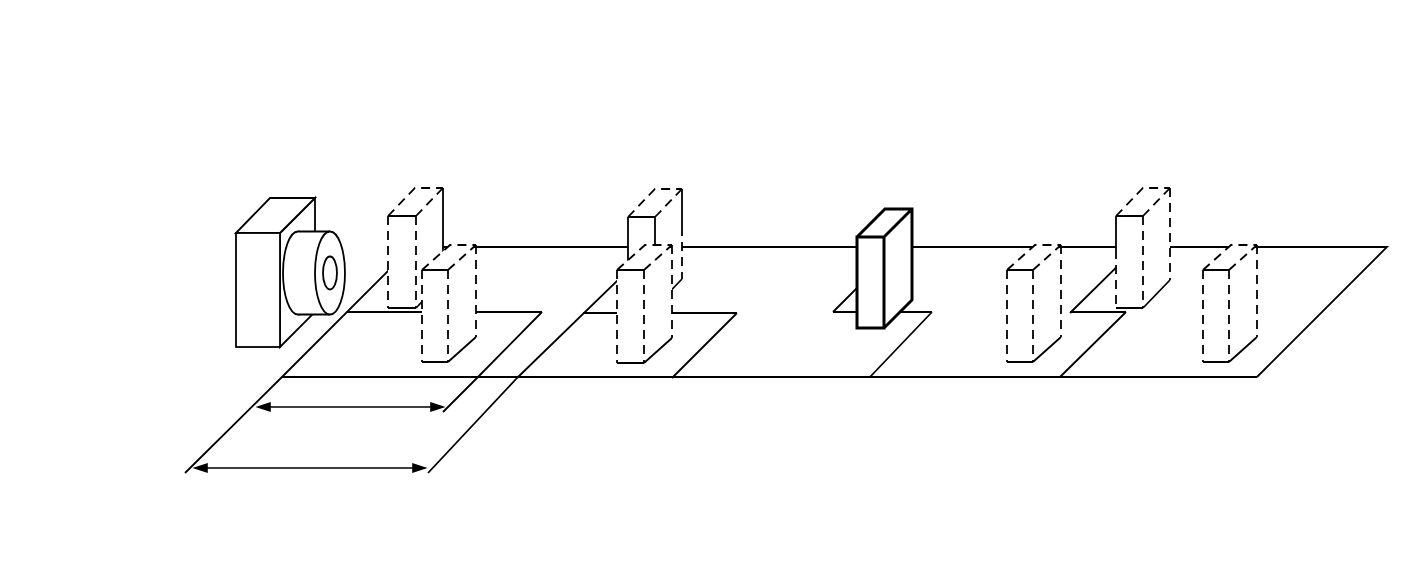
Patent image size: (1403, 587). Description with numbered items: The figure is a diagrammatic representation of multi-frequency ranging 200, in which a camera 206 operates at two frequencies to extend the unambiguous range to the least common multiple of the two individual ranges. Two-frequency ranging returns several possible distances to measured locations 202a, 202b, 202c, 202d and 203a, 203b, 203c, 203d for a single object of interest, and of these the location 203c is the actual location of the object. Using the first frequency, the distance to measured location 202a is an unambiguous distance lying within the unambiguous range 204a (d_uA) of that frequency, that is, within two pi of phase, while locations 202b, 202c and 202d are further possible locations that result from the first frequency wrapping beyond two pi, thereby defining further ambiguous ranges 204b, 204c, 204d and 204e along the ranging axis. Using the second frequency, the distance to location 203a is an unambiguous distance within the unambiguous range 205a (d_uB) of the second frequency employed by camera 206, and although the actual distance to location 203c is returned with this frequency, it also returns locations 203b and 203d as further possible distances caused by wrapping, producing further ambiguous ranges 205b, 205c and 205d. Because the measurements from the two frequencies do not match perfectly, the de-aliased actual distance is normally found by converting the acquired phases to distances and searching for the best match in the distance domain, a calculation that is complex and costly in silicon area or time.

The multi-frequency ranging 200 is at (616, 92).
The measured location 202a is at (470, 243).
The measured location 202b is at (672, 322).
The measured location 202c is at (1048, 243).
The measured location 202d is at (1243, 243).
The measured location 203a is at (428, 188).
The measured location 203b is at (668, 188).
The actual location of the object of interest 203c is at (898, 208).
The measured location 203d is at (1157, 188).
The unambiguous range of the first frequency 204a is at (298, 358).
The ambiguous range 204b is at (627, 379).
The ambiguous range 204c is at (788, 379).
The ambiguous range 204d is at (987, 378).
The ambiguous range 204e is at (1183, 378).
The unambiguous range of the second frequency 205a is at (565, 247).
The ambiguous range 205b is at (772, 247).
The ambiguous range 205c is at (968, 247).
The ambiguous range 205d is at (1318, 247).
The camera 206 is at (290, 197).